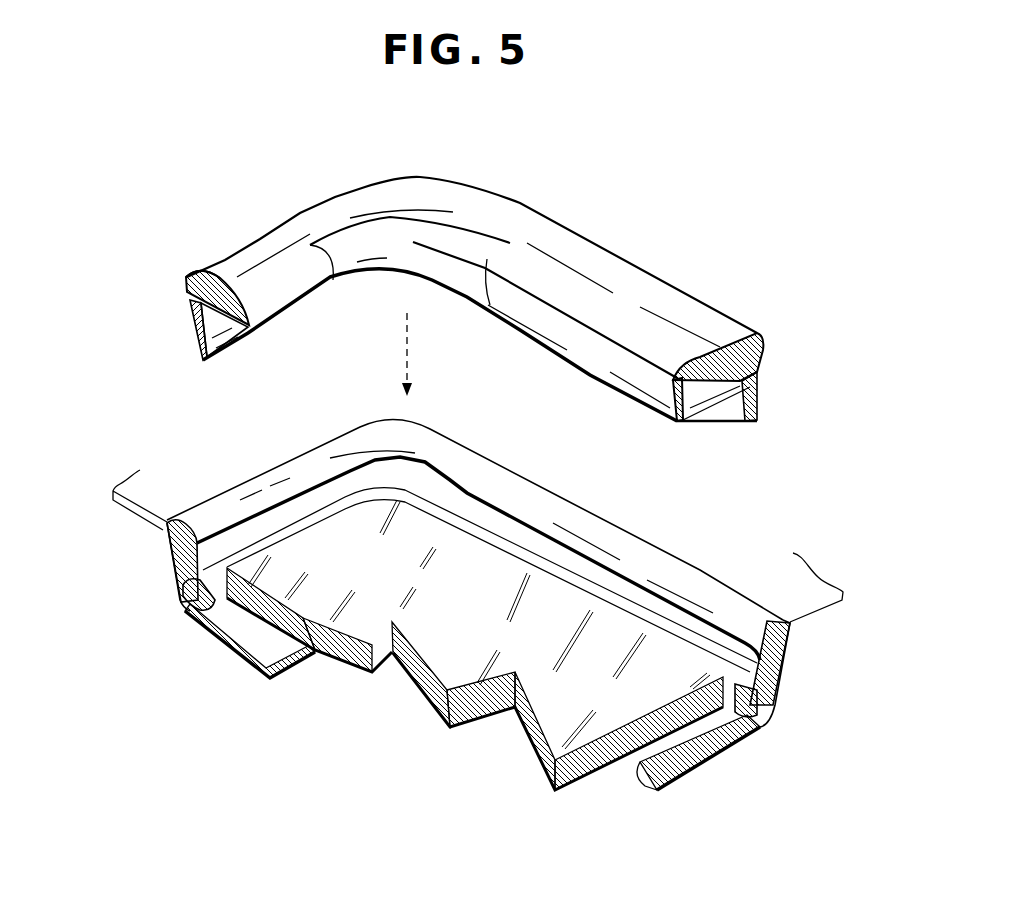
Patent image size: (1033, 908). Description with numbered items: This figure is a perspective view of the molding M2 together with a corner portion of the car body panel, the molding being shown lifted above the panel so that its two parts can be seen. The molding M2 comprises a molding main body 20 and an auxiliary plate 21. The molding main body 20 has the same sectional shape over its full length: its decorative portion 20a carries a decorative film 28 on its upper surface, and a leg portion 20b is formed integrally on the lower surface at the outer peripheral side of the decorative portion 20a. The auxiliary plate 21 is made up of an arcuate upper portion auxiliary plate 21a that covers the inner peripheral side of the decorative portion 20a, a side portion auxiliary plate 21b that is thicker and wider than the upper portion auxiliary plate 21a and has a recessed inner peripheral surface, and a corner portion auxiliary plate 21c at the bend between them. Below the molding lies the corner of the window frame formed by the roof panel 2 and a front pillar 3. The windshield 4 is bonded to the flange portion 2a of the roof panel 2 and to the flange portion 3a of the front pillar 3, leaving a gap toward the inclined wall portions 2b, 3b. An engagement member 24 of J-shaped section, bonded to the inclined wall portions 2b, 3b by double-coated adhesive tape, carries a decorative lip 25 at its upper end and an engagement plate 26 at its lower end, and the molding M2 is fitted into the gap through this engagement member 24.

The molding M2 is at (522, 190).
The molding main body 20 is at (587, 253).
The decorative film 28 is at (187, 276).
The decorative portion 20a is at (190, 296).
The leg portion 20b is at (193, 314).
The auxiliary plate 21 is at (280, 330).
The upper portion auxiliary plate 21a is at (290, 283).
The side portion auxiliary plate 21b is at (630, 337).
The corner portion auxiliary plate 21c is at (427, 265).
The roof panel 2 is at (204, 564).
The front pillar 3 is at (746, 648).
The decorative lip 25 is at (227, 510).
The engagement member 24 is at (630, 597).
The inclined wall portion 2b is at (173, 573).
The inclined wall portion 3b is at (780, 677).
The flange portion 2a is at (237, 657).
The flange portion 3a is at (727, 760).
The engagement plate 26 is at (185, 607).
The windshield 4 is at (450, 643).